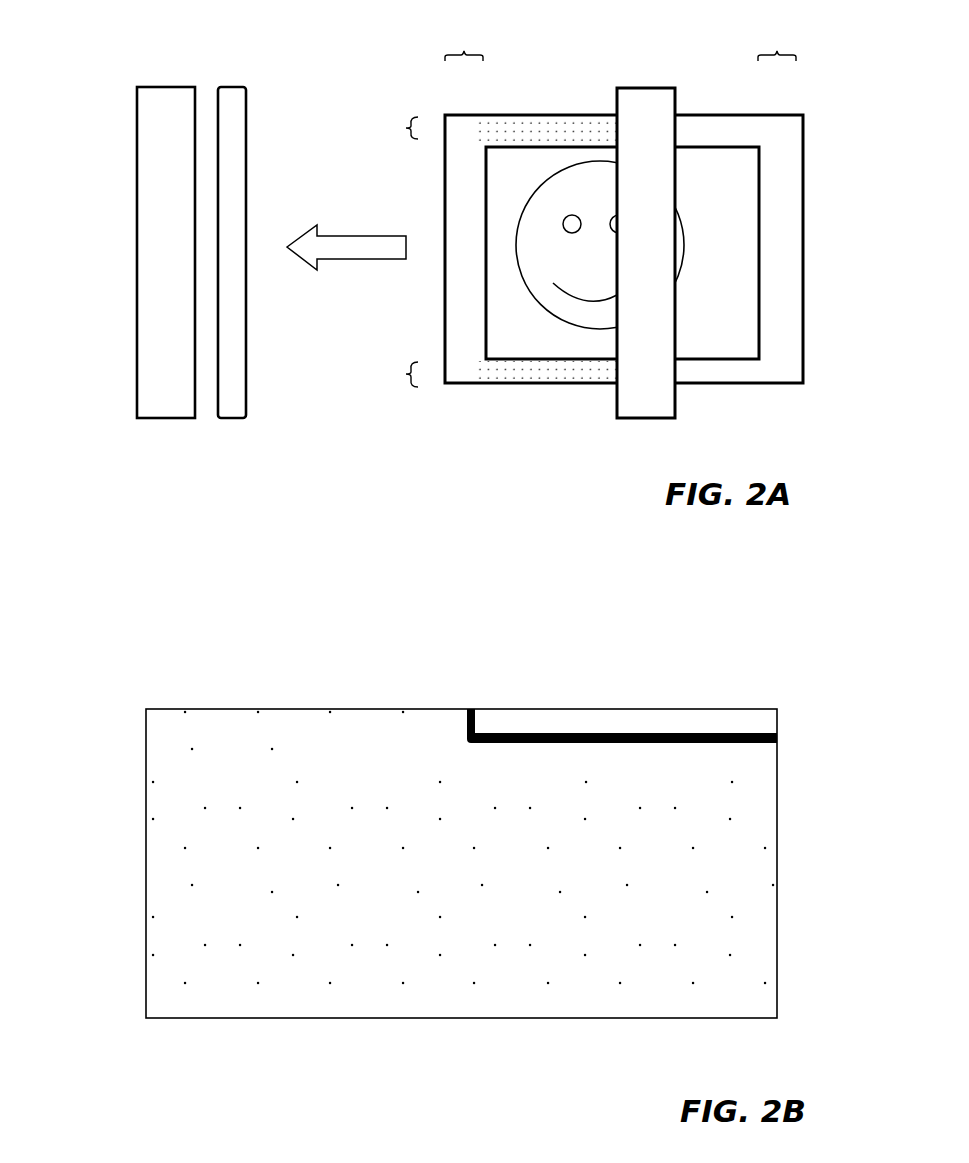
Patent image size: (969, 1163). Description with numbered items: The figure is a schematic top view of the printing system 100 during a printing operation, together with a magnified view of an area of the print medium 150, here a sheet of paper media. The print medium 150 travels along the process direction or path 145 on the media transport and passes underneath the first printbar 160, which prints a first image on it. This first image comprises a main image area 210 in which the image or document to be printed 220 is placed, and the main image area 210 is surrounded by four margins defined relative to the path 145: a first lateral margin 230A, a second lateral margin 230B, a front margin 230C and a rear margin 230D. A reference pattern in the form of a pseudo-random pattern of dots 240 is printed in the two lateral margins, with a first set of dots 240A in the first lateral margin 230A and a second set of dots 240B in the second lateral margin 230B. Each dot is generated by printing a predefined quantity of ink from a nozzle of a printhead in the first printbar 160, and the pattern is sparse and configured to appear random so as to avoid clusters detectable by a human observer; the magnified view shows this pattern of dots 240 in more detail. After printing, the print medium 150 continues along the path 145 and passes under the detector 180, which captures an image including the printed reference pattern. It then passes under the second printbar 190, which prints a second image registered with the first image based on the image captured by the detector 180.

In FIG. 2A, the printing system 100 is at (105, 72).
In FIG. 2A, the second printbar 190 is at (166, 87).
In FIG. 2A, the detector 180 is at (245, 87).
In FIG. 2A, the process direction or path 145 is at (348, 232).
In FIG. 2A, the print medium 150 is at (807, 147).
In FIG. 2B, the print medium 150 is at (778, 900).
In FIG. 2A, the first printbar 160 is at (678, 97).
In FIG. 2A, the main image area 210 is at (732, 342).
In FIG. 2A, the image or document to be printed 220 is at (547, 212).
In FIG. 2A, the first lateral margin 230A is at (395, 122).
In FIG. 2A, the second lateral margin 230B is at (395, 371).
In FIG. 2A, the front margin 230C is at (463, 50).
In FIG. 2A, the rear margin 230D is at (764, 50).
In FIG. 2A, the first set of dots 240A is at (522, 125).
In FIG. 2A, the second set of dots 240B is at (547, 372).
In FIG. 2B, the pseudo-random pattern of dots 240 is at (562, 942).